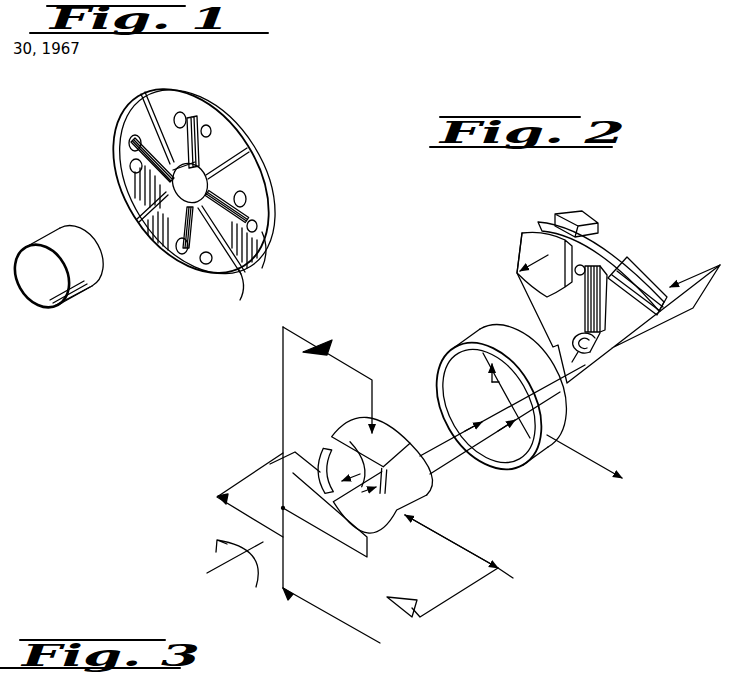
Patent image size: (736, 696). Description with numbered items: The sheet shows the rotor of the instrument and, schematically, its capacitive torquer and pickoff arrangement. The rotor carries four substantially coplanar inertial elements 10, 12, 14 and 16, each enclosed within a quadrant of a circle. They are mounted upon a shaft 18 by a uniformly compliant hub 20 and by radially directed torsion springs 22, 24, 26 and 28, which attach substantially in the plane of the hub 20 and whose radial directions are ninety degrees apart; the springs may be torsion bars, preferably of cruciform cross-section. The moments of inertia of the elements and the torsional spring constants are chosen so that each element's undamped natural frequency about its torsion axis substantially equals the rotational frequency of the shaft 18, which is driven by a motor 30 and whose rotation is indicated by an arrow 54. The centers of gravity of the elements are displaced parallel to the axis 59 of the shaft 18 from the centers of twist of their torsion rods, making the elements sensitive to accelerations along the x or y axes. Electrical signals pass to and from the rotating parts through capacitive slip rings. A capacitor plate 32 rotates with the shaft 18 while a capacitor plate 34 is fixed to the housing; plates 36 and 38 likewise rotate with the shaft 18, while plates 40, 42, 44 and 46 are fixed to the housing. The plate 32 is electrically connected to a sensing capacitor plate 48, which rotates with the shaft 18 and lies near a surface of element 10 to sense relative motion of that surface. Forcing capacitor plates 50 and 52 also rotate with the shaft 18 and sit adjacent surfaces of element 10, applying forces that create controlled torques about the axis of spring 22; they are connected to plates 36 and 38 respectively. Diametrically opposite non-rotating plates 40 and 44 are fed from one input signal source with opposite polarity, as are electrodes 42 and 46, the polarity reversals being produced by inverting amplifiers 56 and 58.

In FIG. 1, the inertial element 10 is at (223, 145).
In FIG. 2, the inertial element 10 is at (603, 250).
In FIG. 1, the inertial element 12 is at (258, 238).
In FIG. 1, the inertial element 14 is at (242, 274).
In FIG. 1, the inertial element 16 is at (135, 185).
In FIG. 1, the shaft 18 is at (112, 221).
In FIG. 1, the uniformly compliant hub 20 is at (188, 196).
In FIG. 2, the uniformly compliant hub 20 is at (612, 353).
In FIG. 1, the torsion spring 22 is at (188, 127).
In FIG. 2, the torsion spring 22 is at (582, 308).
In FIG. 1, the torsion spring 24 is at (246, 210).
In FIG. 1, the torsion spring 26 is at (186, 262).
In FIG. 1, the torsion spring 28 is at (125, 157).
In FIG. 1, the motor 30 is at (85, 297).
In FIG. 2, the capacitor plate 32 is at (510, 453).
In FIG. 2, the capacitor plate 34 is at (547, 437).
In FIG. 2, the capacitor plate 36 is at (332, 455).
In FIG. 2, the capacitor plate 38 is at (403, 490).
In FIG. 2, the capacitor plate 40 is at (385, 432).
In FIG. 2, the capacitor plate 42 is at (417, 462).
In FIG. 2, the capacitor plate 44 is at (377, 520).
In FIG. 2, the capacitor plate 46 is at (277, 451).
In FIG. 2, the sensing capacitor plate 48 is at (530, 247).
In FIG. 2, the forcing capacitor plate 50 is at (643, 278).
In FIG. 2, the forcing capacitor plate 52 is at (667, 275).
In FIG. 2, the arrow 54 is at (225, 533).
In FIG. 2, the inverting amplifier 56 is at (320, 343).
In FIG. 2, the inverting amplifier 58 is at (395, 617).
In FIG. 2, the axis 59 is at (205, 573).